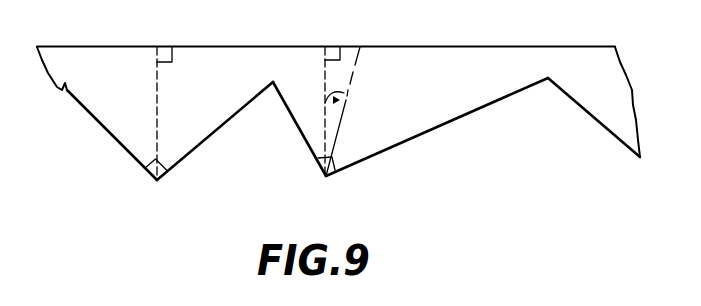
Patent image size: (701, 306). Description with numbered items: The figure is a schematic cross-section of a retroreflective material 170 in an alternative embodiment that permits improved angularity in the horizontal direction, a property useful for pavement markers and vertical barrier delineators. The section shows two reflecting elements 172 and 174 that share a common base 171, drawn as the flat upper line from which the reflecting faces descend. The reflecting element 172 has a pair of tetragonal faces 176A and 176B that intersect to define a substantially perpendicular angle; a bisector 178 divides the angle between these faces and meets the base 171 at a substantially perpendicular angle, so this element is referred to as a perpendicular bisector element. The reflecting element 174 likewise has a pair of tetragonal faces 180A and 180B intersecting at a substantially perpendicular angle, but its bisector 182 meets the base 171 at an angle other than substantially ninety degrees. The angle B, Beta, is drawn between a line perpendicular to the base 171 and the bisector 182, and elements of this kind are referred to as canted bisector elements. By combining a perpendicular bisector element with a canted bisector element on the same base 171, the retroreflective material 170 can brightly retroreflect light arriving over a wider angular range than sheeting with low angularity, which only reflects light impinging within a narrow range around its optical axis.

The retroreflective material 170 is at (108, 38).
The base 171 is at (277, 42).
The reflecting element 172 is at (108, 134).
The reflecting element 174 is at (498, 105).
The tetragonal face 176A is at (131, 158).
The tetragonal face 176B is at (222, 125).
The bisector 178 is at (155, 92).
The tetragonal face 180A is at (305, 140).
The tetragonal face 180B is at (448, 128).
The bisector 182 is at (355, 64).
The angle Beta B is at (344, 93).